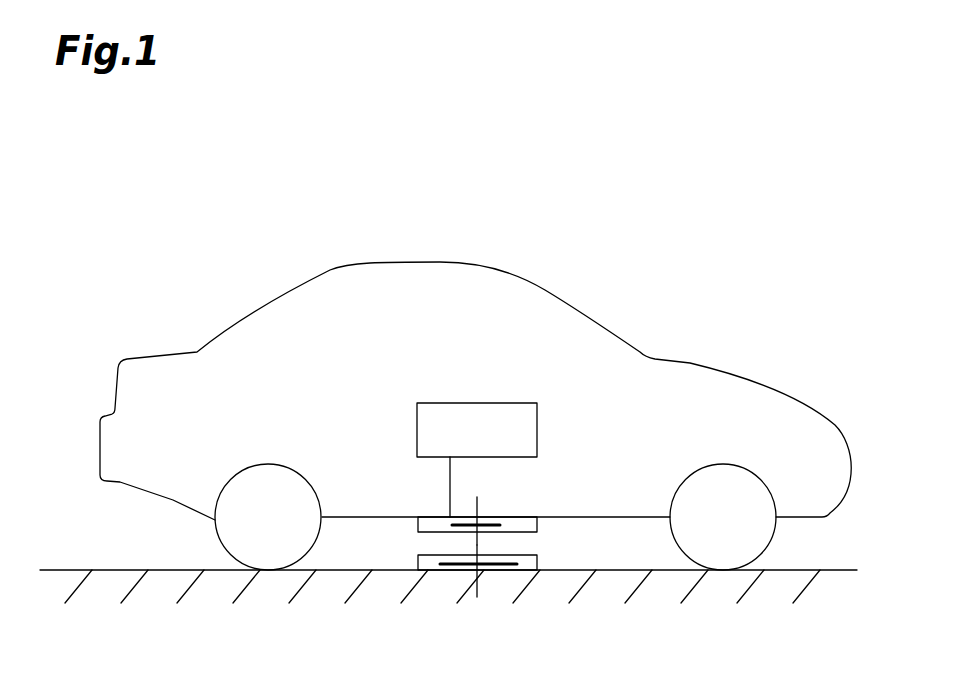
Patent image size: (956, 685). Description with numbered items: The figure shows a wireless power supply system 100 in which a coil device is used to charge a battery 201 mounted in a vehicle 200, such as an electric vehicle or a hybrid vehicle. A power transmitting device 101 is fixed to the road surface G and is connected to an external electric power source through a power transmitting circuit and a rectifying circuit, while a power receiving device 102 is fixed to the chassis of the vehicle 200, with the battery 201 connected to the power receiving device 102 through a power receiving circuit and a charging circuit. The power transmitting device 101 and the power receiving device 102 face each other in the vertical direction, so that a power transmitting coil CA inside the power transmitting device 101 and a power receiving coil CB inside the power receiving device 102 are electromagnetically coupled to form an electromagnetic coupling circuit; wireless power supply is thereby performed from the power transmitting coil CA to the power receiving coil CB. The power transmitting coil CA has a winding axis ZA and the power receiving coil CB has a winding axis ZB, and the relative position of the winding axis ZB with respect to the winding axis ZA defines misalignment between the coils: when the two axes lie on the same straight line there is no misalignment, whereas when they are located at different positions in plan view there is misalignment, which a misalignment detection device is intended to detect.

The wireless power supply system 100 is at (475, 410).
The vehicle 200 is at (187, 351).
The battery 201 is at (417, 428).
The power receiving device 102 is at (476, 567).
The power receiving coil CB is at (495, 534).
The winding axis of power receiving coil ZB is at (478, 505).
The power transmitting device 101 is at (535, 603).
The power transmitting coil CA is at (445, 567).
The winding axis of power transmitting coil ZA is at (477, 587).
The road surface G is at (91, 570).